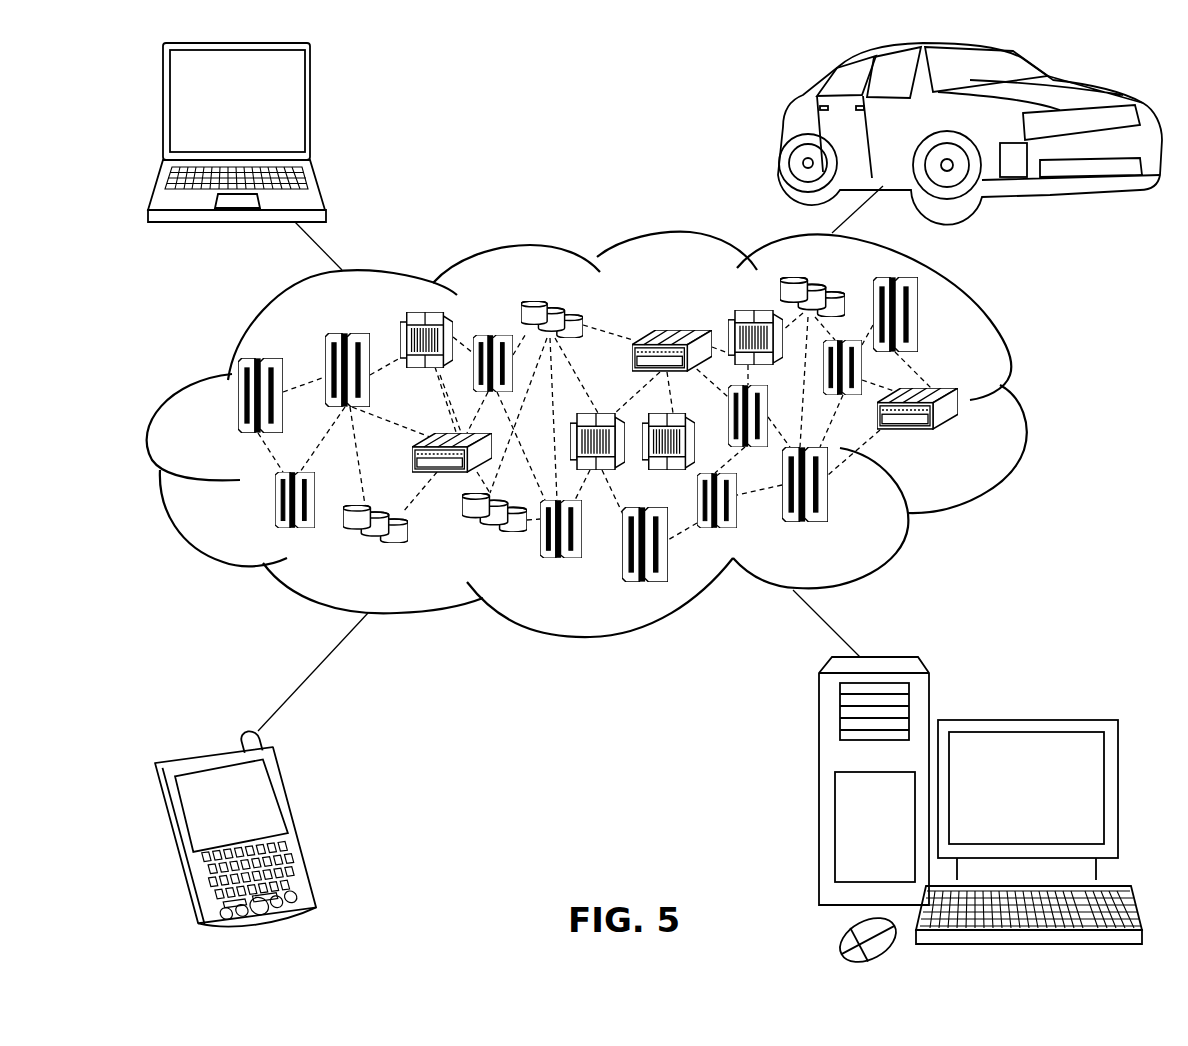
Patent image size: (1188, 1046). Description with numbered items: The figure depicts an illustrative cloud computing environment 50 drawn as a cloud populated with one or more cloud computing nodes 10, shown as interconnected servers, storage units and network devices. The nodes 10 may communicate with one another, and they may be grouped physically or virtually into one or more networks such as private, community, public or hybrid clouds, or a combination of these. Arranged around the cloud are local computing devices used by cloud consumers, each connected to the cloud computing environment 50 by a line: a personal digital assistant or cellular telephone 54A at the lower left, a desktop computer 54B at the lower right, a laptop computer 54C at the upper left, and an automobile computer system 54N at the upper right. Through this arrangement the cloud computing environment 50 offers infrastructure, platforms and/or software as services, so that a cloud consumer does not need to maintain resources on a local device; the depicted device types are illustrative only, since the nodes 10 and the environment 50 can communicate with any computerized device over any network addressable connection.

The cloud computing node 10 is at (968, 443).
The cloud computing environment 50 is at (1030, 404).
The personal digital assistant or cellular telephone 54A is at (300, 820).
The desktop computer 54B is at (1022, 720).
The laptop computer 54C is at (312, 110).
The automobile computer system 54N is at (788, 126).